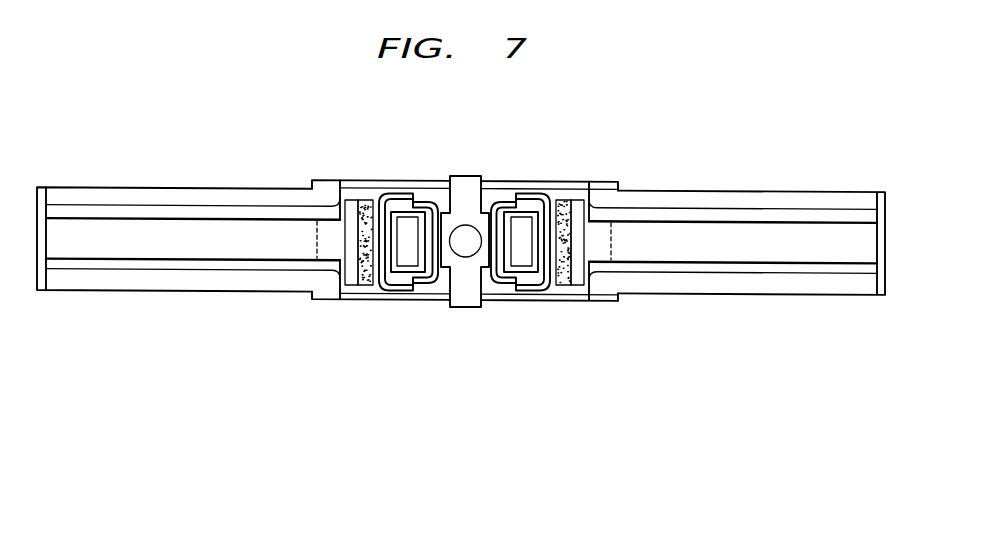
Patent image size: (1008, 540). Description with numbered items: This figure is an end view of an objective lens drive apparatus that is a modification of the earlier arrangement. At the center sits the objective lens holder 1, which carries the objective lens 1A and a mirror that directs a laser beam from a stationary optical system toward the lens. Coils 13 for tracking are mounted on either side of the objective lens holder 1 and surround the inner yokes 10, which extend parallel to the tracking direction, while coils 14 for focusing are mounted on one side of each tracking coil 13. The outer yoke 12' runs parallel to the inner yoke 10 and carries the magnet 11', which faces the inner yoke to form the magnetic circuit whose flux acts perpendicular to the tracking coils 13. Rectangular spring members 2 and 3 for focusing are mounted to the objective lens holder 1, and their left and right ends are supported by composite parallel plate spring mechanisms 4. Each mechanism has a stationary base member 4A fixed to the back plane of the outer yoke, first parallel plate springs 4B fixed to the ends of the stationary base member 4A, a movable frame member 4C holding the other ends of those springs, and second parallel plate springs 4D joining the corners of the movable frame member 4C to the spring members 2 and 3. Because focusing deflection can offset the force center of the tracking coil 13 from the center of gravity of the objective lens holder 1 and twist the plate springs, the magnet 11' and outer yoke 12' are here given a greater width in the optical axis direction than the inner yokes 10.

The objective lens holder 1 is at (464, 268).
The objective lens 1A is at (463, 188).
The spring member 2 is at (550, 181).
The spring member 3 is at (353, 292).
The composite parallel plate spring mechanism 4 is at (461, 236).
The stationary base member 4A is at (330, 241).
The first parallel plate spring 4B is at (830, 232).
The movable frame member 4C is at (85, 205).
The second parallel plate spring 4D is at (287, 190).
The inner yoke 10 is at (520, 223).
The magnet 11' is at (464, 187).
The outer yoke 12' is at (460, 199).
The tracking coil 13 is at (429, 283).
The focusing coil 14 is at (396, 291).